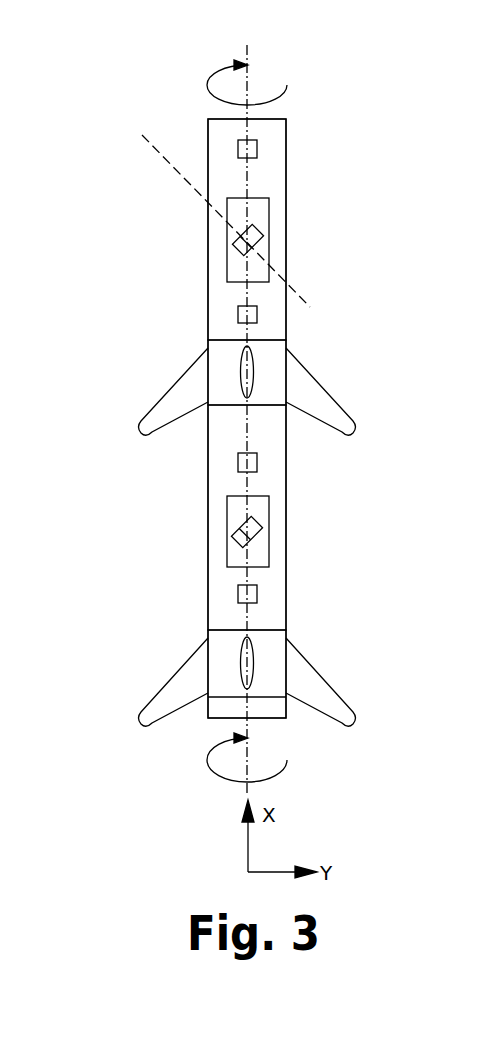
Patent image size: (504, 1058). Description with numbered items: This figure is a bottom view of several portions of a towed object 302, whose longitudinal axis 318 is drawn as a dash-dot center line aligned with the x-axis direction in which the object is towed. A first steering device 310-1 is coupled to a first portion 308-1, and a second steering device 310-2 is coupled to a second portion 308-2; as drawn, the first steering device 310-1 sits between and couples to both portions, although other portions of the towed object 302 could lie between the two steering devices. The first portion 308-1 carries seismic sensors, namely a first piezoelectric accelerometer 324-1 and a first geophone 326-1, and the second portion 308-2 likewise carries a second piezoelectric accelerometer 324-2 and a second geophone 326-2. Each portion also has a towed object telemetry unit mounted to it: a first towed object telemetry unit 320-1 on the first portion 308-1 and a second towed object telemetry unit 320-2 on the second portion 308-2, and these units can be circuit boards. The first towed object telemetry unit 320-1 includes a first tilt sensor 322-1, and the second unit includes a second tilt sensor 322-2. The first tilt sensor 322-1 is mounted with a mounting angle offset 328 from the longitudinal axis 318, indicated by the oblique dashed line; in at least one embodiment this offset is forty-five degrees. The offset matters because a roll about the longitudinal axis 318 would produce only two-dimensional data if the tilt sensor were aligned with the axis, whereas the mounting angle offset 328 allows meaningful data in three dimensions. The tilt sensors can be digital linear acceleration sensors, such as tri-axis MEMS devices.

The towed object 302 is at (166, 90).
The first portion 308-1 is at (286, 183).
The second portion 308-2 is at (286, 462).
The first steering device 310-1 is at (268, 348).
The second steering device 310-2 is at (268, 643).
The longitudinal axis 318 is at (250, 48).
The first towed object telemetry unit 320-1 is at (269, 230).
The second towed object telemetry unit 320-2 is at (269, 511).
The first tilt sensor 322-1 is at (236, 250).
The second tilt sensor 322-2 is at (235, 544).
The first piezoelectric accelerometer 324-1 is at (257, 148).
The second piezoelectric accelerometer 324-2 is at (238, 462).
The first geophone 326-1 is at (238, 313).
The second geophone 326-2 is at (257, 590).
The mounting angle offset 328 is at (236, 165).